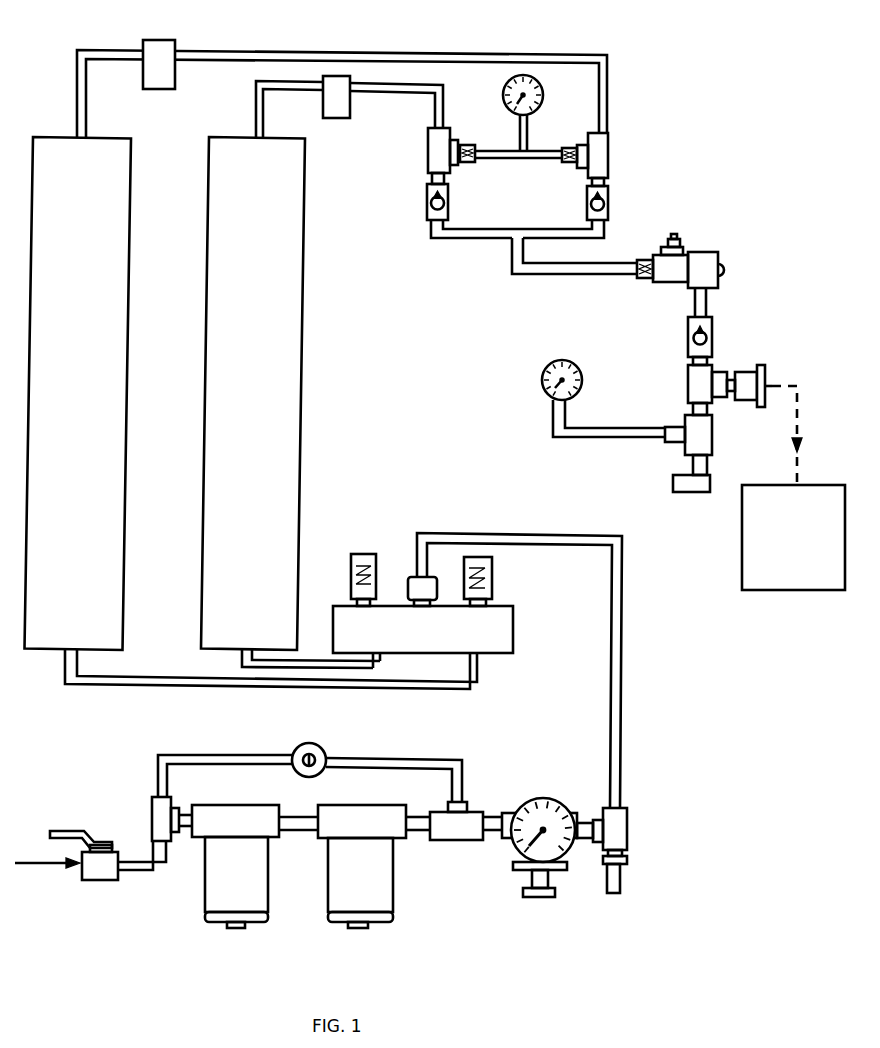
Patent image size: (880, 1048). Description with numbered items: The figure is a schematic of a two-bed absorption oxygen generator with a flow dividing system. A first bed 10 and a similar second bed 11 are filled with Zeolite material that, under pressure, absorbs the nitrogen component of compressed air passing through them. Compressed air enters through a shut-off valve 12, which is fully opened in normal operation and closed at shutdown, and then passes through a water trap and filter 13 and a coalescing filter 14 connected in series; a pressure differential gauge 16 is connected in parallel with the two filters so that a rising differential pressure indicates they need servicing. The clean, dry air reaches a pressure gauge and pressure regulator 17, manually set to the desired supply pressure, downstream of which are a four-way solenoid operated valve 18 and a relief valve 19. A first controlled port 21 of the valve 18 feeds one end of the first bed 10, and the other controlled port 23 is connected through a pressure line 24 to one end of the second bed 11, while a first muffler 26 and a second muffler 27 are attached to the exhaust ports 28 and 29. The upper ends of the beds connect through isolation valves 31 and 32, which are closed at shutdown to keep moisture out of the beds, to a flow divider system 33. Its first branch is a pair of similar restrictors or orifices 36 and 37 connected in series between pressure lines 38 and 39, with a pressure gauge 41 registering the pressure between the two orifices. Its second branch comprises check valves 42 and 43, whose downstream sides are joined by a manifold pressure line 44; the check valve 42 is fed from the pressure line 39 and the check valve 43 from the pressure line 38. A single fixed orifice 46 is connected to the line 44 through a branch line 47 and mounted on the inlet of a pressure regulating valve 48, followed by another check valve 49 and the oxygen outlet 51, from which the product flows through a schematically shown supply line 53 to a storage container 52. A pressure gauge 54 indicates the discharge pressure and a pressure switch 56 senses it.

The first bed 10 is at (70, 378).
The second bed 11 is at (242, 378).
The shut-off valve 12 is at (94, 883).
The water trap and filter 13 is at (204, 891).
The coalescing filter 14 is at (390, 893).
The pressure differential gauge 16 is at (326, 745).
The pressure gauge and pressure regulator 17 is at (578, 858).
The four-way solenoid operated valve 18 is at (513, 628).
The relief valve 19 is at (622, 874).
The first controlled port 21 is at (478, 656).
The other controlled port 23 is at (388, 659).
The pressure line 24 is at (324, 660).
The first muffler 26 is at (370, 552).
The second muffler 27 is at (492, 576).
The exhaust port 28 is at (349, 600).
The exhaust port 29 is at (494, 606).
The isolation valve 31 is at (164, 45).
The isolation valve 32 is at (336, 110).
The flow divider system 33 is at (566, 179).
The restrictor or orifice 36 is at (462, 140).
The restrictor or orifice 37 is at (571, 144).
The pressure line 38 is at (360, 53).
The pressure line 39 is at (385, 98).
The pressure gauge 41 is at (543, 92).
The check valve 42 is at (449, 201).
The check valve 43 is at (587, 201).
The manifold pressure line 44 is at (467, 238).
The single fixed orifice 46 is at (646, 278).
The branch line 47 is at (582, 274).
The pressure regulating valve 48 is at (694, 250).
The check valve 49 is at (713, 334).
The oxygen outlet 51 is at (766, 374).
The storage container 52 is at (742, 536).
The supply line 53 is at (802, 401).
The pressure gauge 54 is at (582, 378).
The pressure switch 56 is at (688, 492).